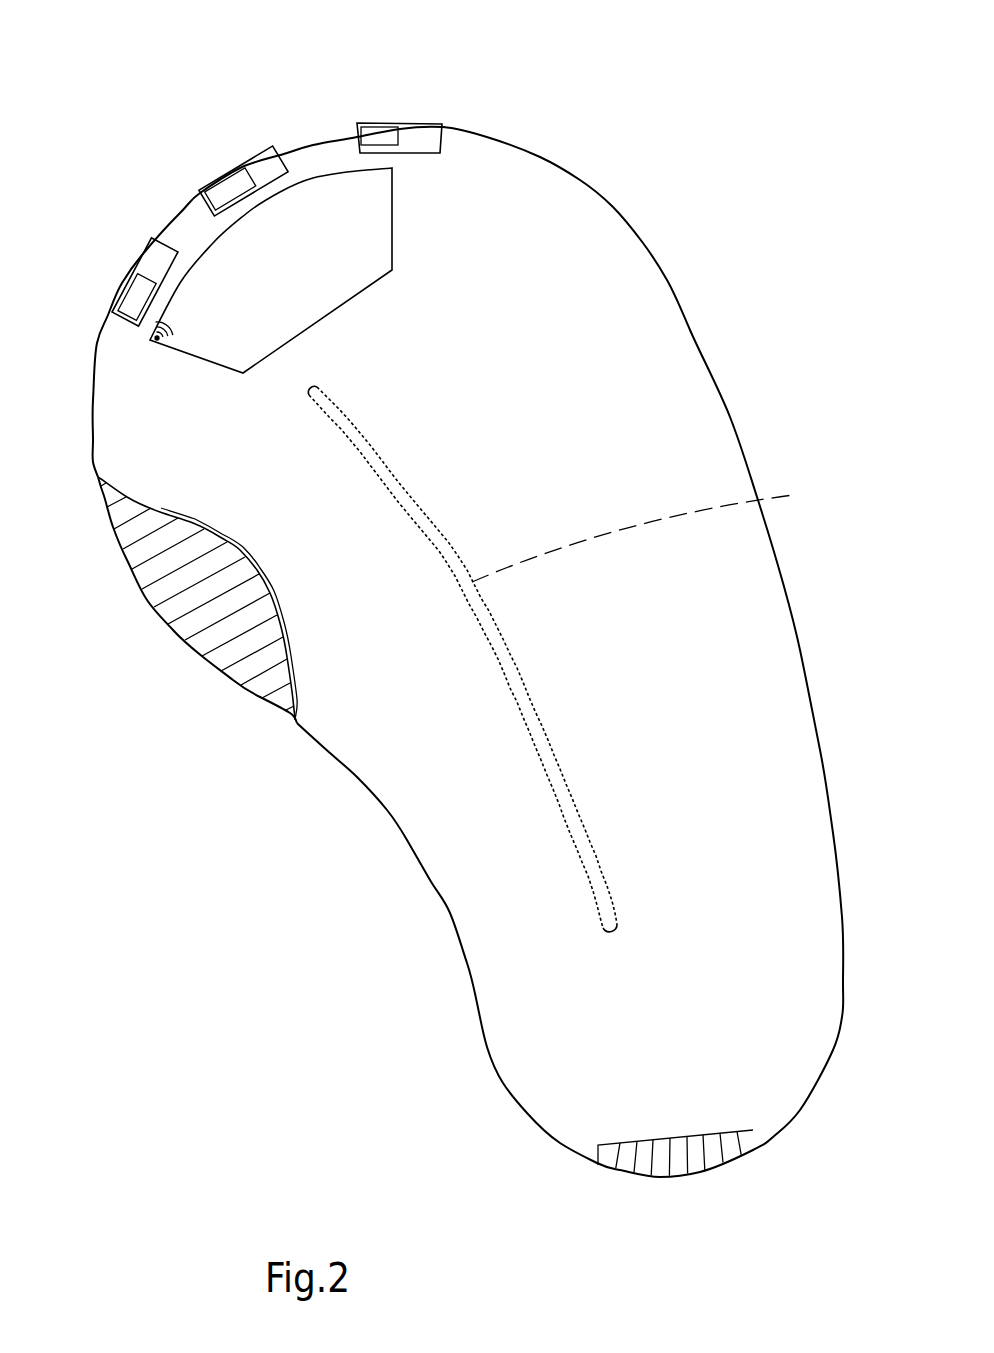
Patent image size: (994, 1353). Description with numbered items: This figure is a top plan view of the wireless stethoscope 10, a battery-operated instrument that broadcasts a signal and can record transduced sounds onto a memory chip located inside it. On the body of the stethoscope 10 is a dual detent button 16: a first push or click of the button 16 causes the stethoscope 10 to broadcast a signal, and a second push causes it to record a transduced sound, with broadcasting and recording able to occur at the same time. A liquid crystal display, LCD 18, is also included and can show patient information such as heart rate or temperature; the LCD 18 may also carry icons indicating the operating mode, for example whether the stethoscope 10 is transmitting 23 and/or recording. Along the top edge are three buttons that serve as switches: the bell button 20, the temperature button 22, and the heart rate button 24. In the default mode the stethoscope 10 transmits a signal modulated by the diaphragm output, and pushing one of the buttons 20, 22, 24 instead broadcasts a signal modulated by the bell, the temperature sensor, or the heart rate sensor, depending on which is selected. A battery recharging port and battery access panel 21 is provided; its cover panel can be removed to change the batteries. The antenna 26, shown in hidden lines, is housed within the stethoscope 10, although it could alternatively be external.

The stethoscope 10 is at (596, 70).
The dual detent button 16 is at (203, 658).
The liquid crystal display (LCD) 18 is at (392, 217).
The bell button 20 is at (123, 283).
The battery recharging port/battery access panel 21 is at (693, 1177).
The temperature button 22 is at (383, 117).
The transmitting icon 23 is at (155, 345).
The heart rate button 24 is at (227, 167).
The antenna 26 is at (650, 529).